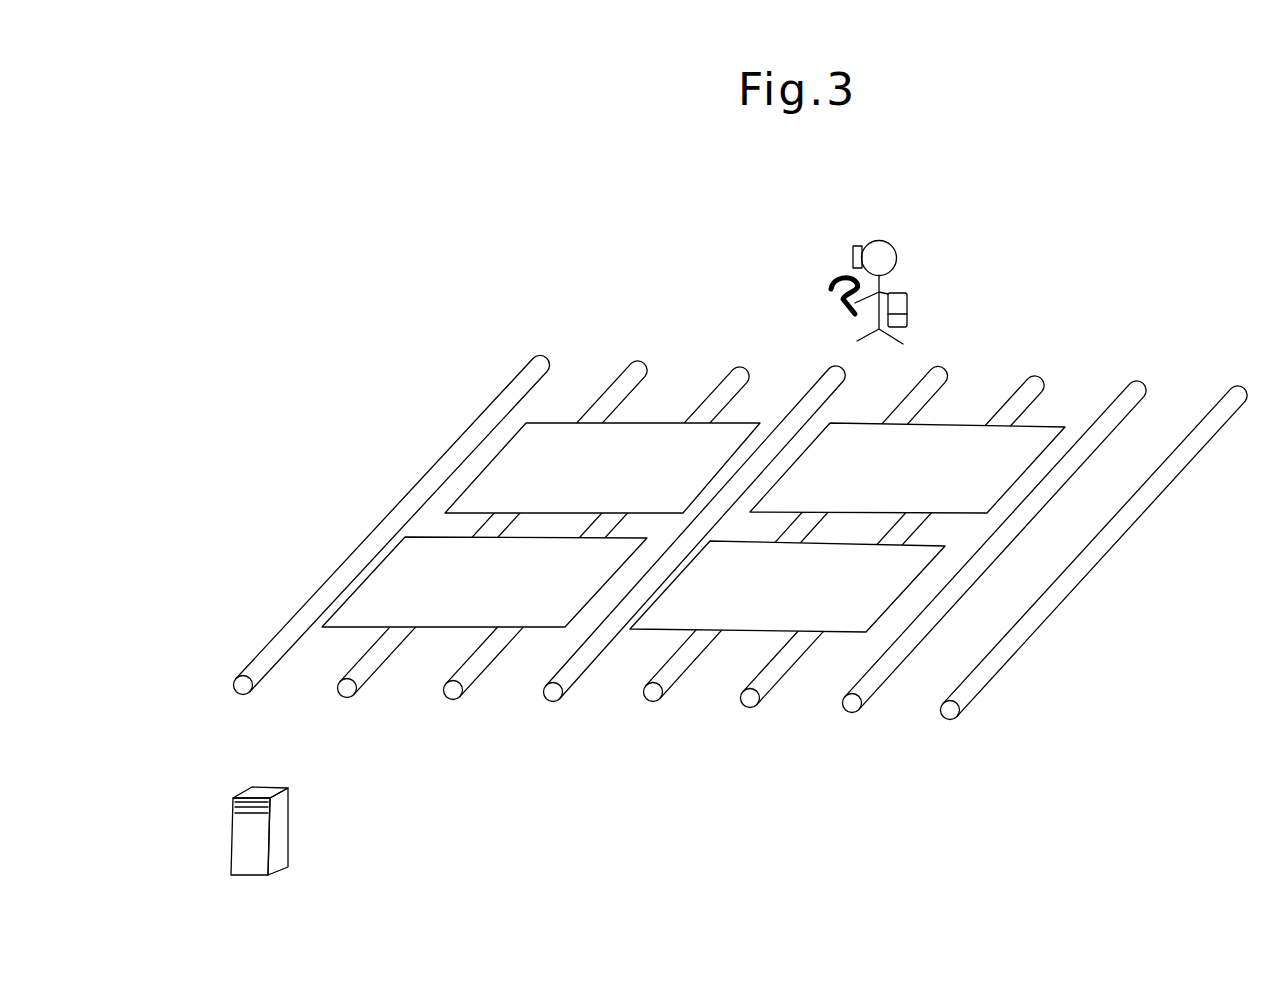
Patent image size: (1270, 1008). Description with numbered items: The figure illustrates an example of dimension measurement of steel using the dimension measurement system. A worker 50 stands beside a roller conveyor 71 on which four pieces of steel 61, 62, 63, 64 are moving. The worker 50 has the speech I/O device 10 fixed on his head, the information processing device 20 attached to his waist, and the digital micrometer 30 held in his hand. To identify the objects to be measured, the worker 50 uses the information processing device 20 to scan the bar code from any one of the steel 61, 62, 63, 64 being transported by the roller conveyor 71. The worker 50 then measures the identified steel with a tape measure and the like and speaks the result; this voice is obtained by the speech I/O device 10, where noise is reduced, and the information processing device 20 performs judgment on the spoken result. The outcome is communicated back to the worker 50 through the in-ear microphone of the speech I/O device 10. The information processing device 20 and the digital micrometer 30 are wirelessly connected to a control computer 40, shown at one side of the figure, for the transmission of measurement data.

The speech I/O device 10 is at (857, 246).
The information processing device 20 is at (900, 294).
The digital micrometer 30 is at (831, 284).
The control computer 40 is at (237, 797).
The worker 50 is at (879, 241).
The steel 61 is at (947, 422).
The steel 62 is at (548, 422).
The steel 63 is at (752, 632).
The steel 64 is at (450, 628).
The roller conveyor 71 is at (1138, 387).